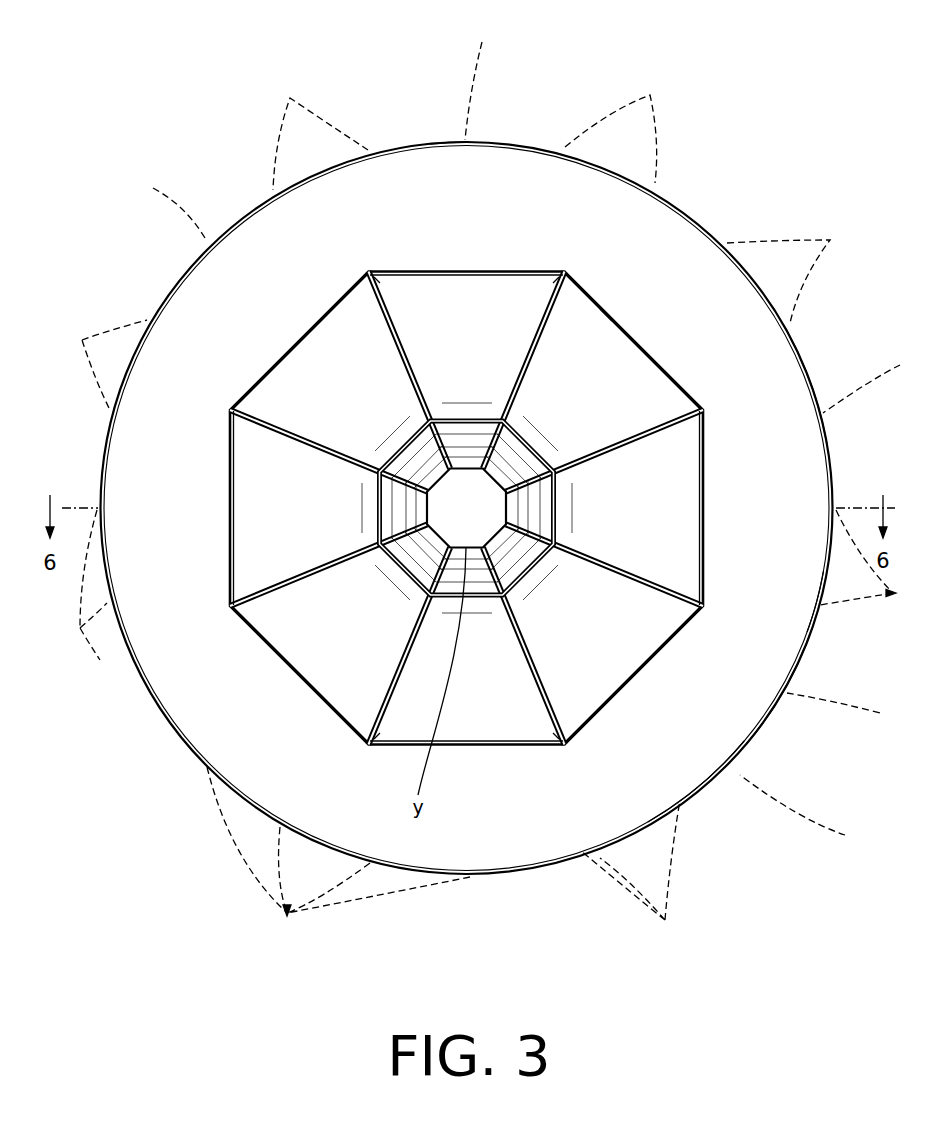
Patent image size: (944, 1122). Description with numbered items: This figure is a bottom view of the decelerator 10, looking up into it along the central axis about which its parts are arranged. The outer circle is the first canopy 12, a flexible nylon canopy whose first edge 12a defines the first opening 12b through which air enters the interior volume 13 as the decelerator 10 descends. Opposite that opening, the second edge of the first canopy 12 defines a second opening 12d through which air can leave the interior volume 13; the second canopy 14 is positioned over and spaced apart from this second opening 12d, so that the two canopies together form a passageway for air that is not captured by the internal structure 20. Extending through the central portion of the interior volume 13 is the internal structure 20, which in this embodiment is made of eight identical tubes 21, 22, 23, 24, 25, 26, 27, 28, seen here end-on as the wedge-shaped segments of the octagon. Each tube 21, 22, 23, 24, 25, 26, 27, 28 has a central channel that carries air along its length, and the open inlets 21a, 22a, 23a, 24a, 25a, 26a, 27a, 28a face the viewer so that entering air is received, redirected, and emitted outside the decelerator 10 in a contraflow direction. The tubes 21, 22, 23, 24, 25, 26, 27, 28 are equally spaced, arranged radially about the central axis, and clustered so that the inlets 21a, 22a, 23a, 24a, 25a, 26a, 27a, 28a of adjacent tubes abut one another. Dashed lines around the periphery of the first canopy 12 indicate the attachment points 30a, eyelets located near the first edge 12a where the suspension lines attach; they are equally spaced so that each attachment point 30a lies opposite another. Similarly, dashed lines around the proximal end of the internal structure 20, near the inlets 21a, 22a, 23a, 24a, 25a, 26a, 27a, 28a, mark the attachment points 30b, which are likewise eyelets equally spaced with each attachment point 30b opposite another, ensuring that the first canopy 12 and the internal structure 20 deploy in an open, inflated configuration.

The decelerator 10 is at (170, 145).
The first canopy 12 is at (225, 232).
The first edge 12a is at (796, 668).
The first opening 12b is at (745, 707).
The second opening 12d is at (500, 512).
The interior volume 13 is at (772, 592).
The second canopy 14 is at (463, 473).
The internal structure 20 is at (293, 340).
The tube 21 is at (450, 268).
The inlet 21a is at (423, 292).
The tube 22 is at (267, 360).
The inlet 22a is at (323, 367).
The tube 23 is at (227, 508).
The inlet 23a is at (250, 477).
The tube 24 is at (340, 660).
The inlet 24a is at (270, 647).
The tube 25 is at (497, 700).
The inlet 25a is at (470, 747).
The tube 26 is at (603, 710).
The inlet 26a is at (590, 657).
The tube 27 is at (707, 500).
The inlet 27a is at (683, 530).
The tube 28 is at (607, 310).
The inlet 28a is at (607, 350).
The attachment points 30a is at (482, 487).
The attachment points 30b is at (758, 385).